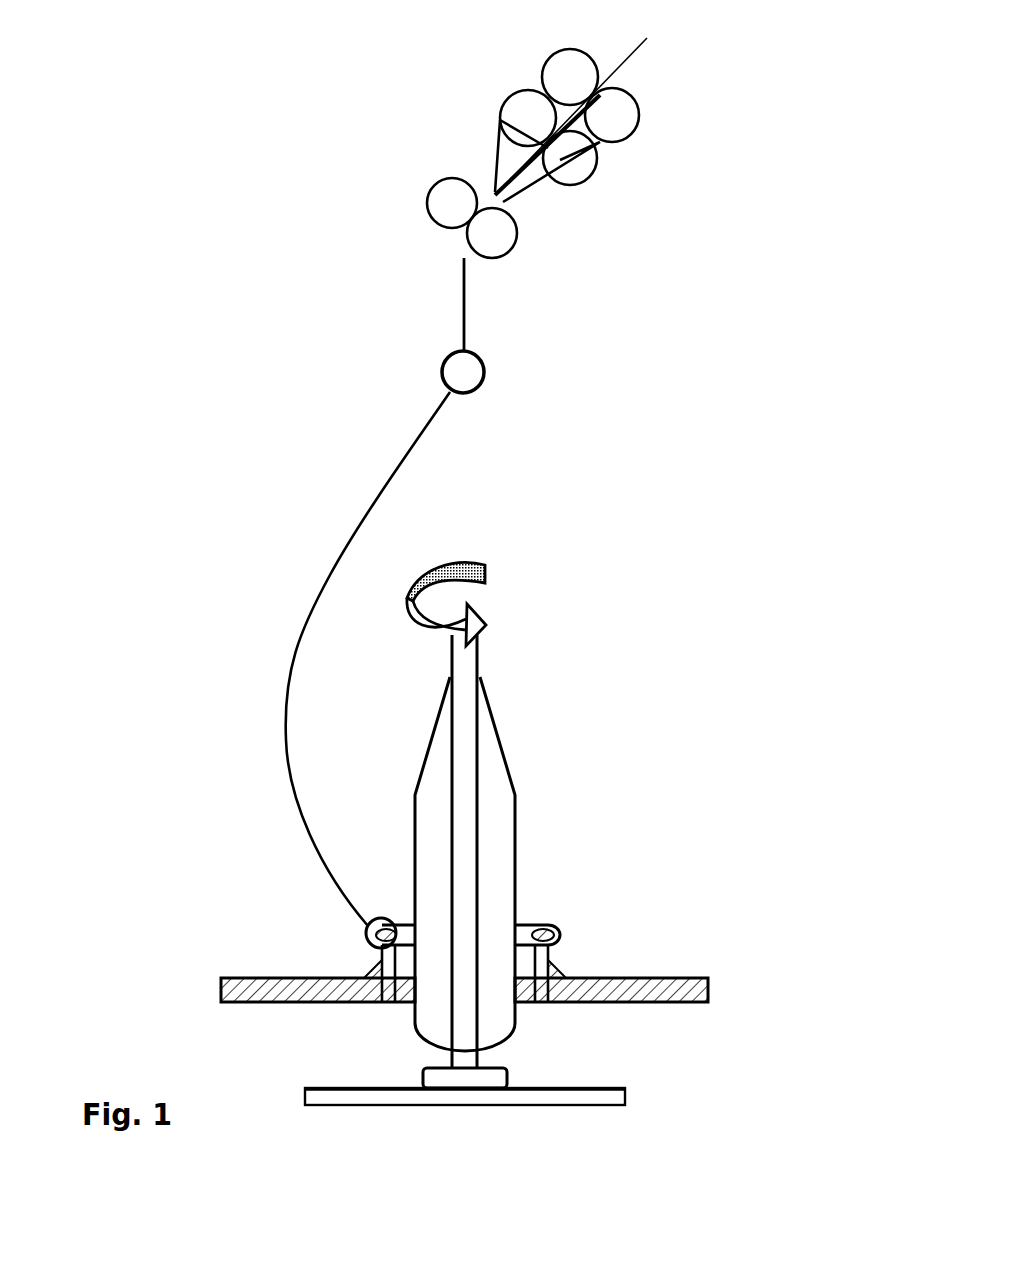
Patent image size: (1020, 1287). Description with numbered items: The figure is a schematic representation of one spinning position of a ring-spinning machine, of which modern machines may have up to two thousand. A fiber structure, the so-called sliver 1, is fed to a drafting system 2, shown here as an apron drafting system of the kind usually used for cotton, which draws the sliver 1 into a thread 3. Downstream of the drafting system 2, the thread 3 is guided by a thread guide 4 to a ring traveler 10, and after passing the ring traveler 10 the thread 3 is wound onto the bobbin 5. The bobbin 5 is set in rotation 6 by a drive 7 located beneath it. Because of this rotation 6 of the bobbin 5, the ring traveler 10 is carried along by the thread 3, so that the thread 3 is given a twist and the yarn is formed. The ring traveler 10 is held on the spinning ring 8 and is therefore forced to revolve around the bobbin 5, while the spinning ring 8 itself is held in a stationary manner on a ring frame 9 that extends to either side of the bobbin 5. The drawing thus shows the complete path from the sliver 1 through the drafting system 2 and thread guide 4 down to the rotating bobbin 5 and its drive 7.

The sliver 1 is at (639, 48).
The drafting system 2 is at (438, 133).
The thread 3 is at (462, 262).
The thread guide 4 is at (480, 380).
The bobbin 5 is at (483, 822).
The rotation 6 is at (469, 604).
The drive 7 is at (625, 1100).
The spinning ring 8 is at (556, 928).
The ring frame 9 is at (645, 978).
The ring traveler 10 is at (360, 937).